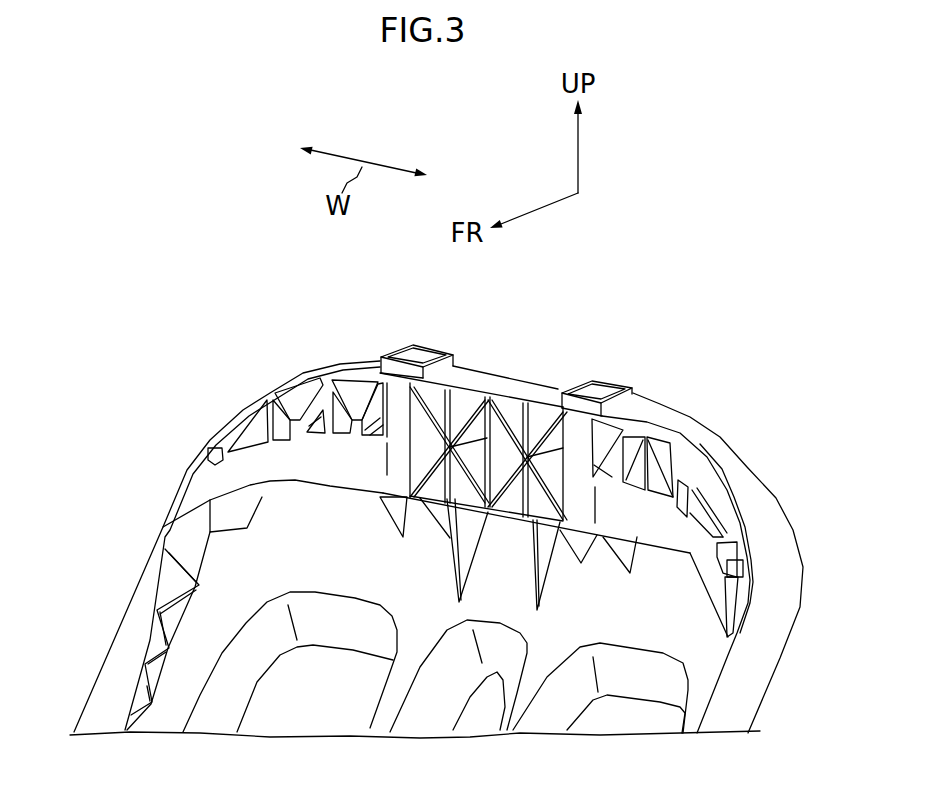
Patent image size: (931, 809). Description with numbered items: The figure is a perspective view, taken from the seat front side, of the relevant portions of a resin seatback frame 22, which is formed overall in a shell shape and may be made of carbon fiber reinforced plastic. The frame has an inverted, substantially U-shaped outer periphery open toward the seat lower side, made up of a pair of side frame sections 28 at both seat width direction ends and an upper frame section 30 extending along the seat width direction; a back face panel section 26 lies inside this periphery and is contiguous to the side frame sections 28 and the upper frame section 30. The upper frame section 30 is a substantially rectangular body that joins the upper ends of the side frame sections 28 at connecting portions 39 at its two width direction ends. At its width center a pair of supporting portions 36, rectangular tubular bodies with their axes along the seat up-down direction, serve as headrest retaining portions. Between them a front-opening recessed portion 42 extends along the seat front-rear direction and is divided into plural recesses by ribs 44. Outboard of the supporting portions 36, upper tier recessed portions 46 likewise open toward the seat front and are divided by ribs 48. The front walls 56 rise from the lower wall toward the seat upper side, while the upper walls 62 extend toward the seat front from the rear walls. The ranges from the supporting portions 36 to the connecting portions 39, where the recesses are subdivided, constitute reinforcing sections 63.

The seatback frame 22 is at (451, 506).
The back face panel section 26 is at (395, 665).
The side frame sections 28 is at (450, 631).
The upper frame section 30 is at (473, 417).
The supporting portions 36 is at (506, 347).
The connecting portions 39 is at (469, 561).
The recessed portion 42 is at (562, 541).
The ribs 44 is at (434, 544).
The recessed portions 46 is at (537, 469).
The ribs 48 is at (465, 416).
The front walls 56 is at (501, 527).
The upper walls 62 is at (444, 508).
The reinforcing sections 63 is at (449, 532).